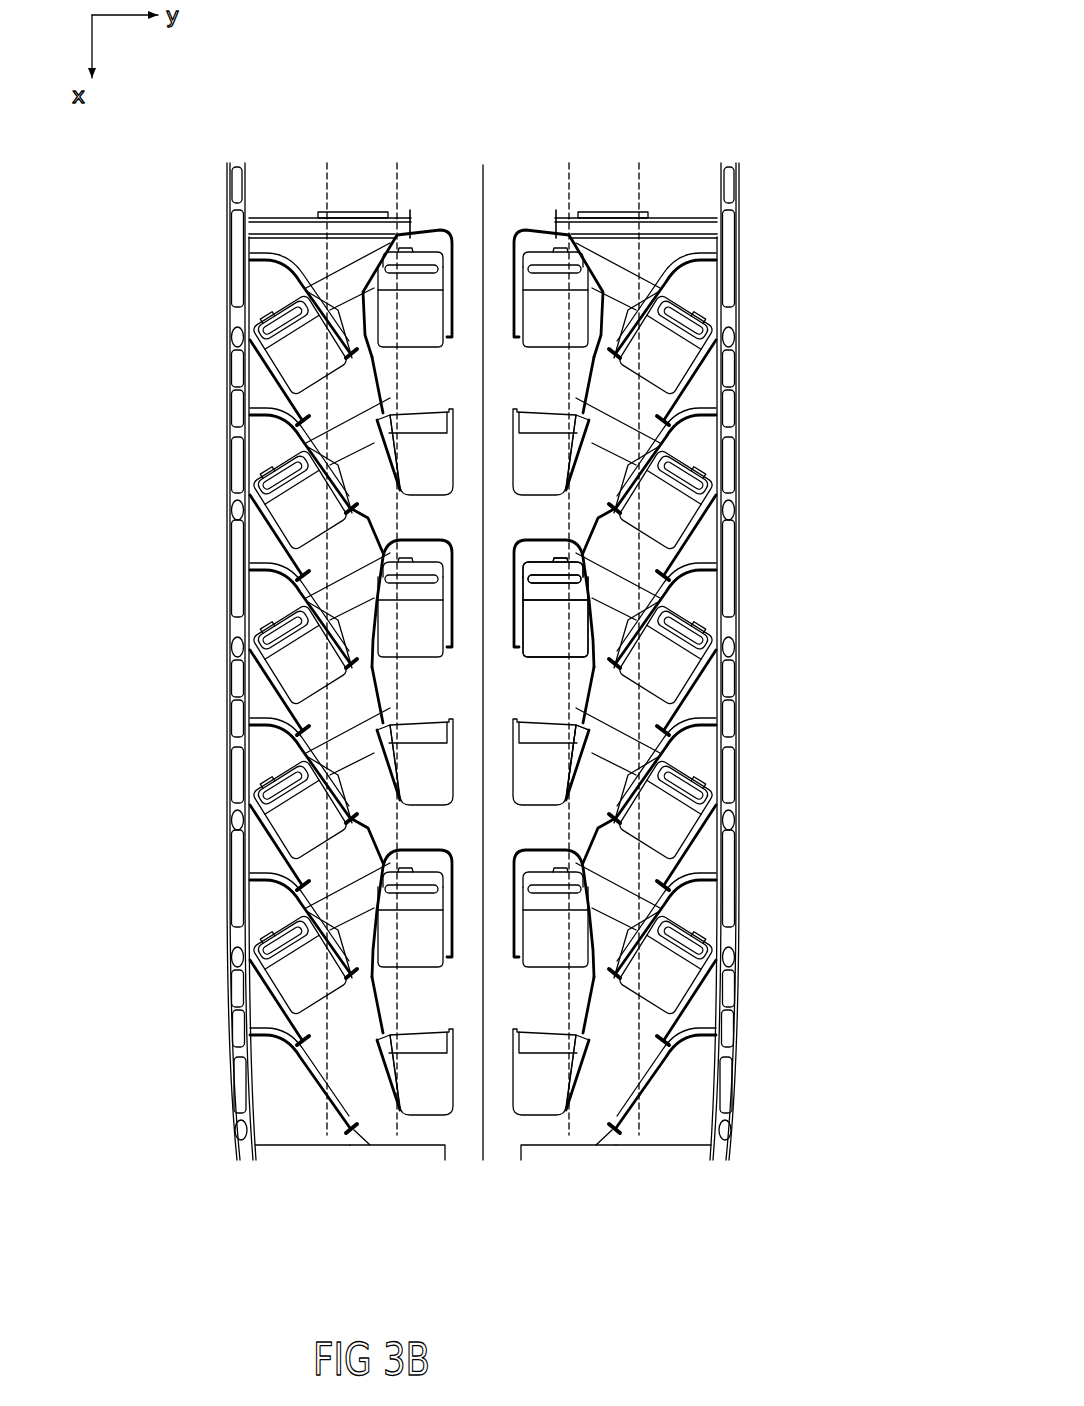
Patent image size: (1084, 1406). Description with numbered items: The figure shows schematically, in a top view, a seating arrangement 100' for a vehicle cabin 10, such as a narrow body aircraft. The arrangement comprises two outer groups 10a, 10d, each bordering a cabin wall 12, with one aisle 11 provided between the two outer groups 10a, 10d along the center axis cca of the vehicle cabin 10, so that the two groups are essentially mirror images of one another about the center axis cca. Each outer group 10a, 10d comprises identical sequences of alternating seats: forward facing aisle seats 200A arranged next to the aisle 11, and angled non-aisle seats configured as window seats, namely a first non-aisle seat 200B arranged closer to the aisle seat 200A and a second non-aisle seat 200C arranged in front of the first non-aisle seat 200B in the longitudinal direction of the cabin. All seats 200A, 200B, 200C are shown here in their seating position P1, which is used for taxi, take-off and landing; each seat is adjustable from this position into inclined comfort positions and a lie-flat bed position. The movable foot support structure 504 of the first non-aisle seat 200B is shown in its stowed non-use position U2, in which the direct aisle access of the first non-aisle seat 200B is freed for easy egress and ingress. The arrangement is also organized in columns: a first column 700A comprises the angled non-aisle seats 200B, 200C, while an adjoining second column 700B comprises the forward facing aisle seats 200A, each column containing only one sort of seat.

The seating arrangement 100' is at (522, 648).
The vehicle cabin 10 is at (695, 118).
The outer group 10a is at (292, 118).
The outer group 10d is at (610, 118).
The aisle 11 is at (502, 133).
The center axis cca is at (483, 165).
The cabin wall 12 is at (211, 265).
The aisle seat 200A is at (569, 549).
The first non-aisle seat 200B is at (699, 586).
The second non-aisle seat 200C is at (699, 734).
The seating position P1 is at (569, 561).
The foot support structure 504 is at (582, 775).
The stowed non-use position U2 is at (582, 788).
The first column 700A is at (298, 1165).
The second column 700B is at (405, 1165).